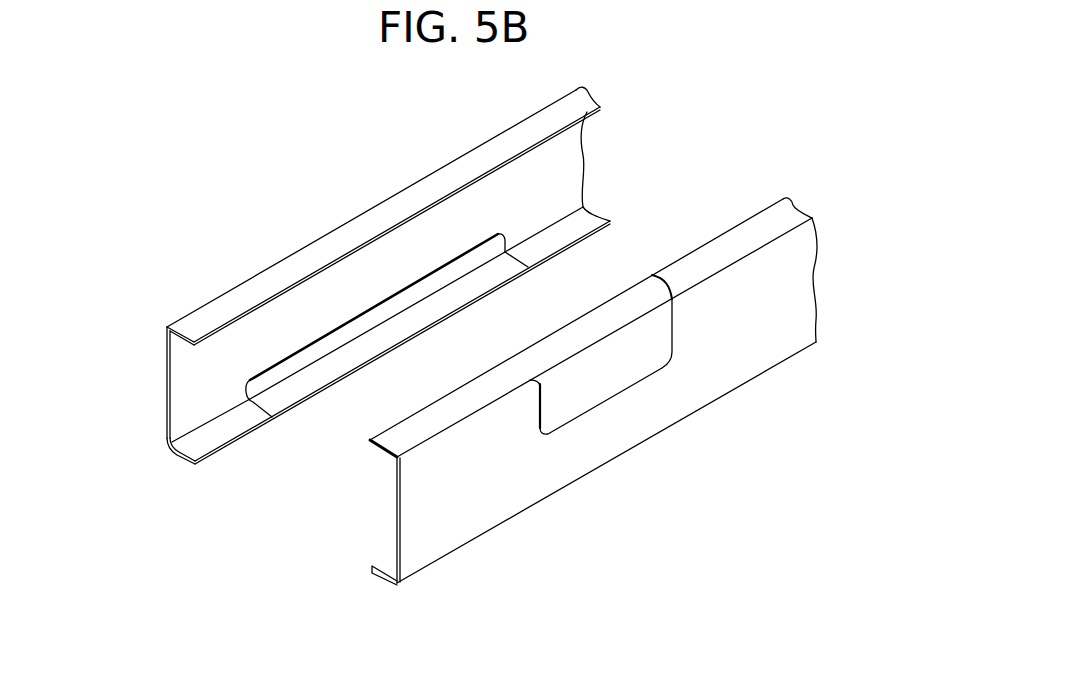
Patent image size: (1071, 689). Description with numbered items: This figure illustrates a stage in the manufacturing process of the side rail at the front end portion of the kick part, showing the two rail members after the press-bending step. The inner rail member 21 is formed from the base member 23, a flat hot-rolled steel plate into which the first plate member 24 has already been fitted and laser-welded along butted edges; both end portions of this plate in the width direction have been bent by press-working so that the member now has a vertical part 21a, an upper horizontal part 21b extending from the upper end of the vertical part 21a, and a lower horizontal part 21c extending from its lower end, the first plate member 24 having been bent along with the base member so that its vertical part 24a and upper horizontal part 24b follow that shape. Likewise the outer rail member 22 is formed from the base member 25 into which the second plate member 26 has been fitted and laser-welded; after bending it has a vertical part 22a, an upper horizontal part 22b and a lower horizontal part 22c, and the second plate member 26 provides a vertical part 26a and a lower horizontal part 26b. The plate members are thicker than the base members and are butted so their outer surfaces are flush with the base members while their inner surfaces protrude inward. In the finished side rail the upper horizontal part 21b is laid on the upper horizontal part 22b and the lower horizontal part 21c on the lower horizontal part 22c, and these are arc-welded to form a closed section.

The inner rail member 21 is at (663, 431).
The vertical part 21a is at (520, 487).
The upper horizontal part 21b is at (752, 230).
The lower horizontal part 21c is at (387, 563).
The outer rail member 22 is at (357, 212).
The vertical part 22a is at (185, 387).
The upper horizontal part 22b is at (432, 183).
The lower horizontal part 22c is at (190, 451).
The base member 23 is at (593, 430).
The first plate member 24 is at (652, 337).
The vertical part 24a is at (647, 357).
The upper horizontal part 24b is at (618, 308).
The base member 25 is at (277, 290).
The second plate member 26 is at (313, 377).
The vertical part 26a is at (330, 345).
The lower horizontal part 26b is at (398, 330).